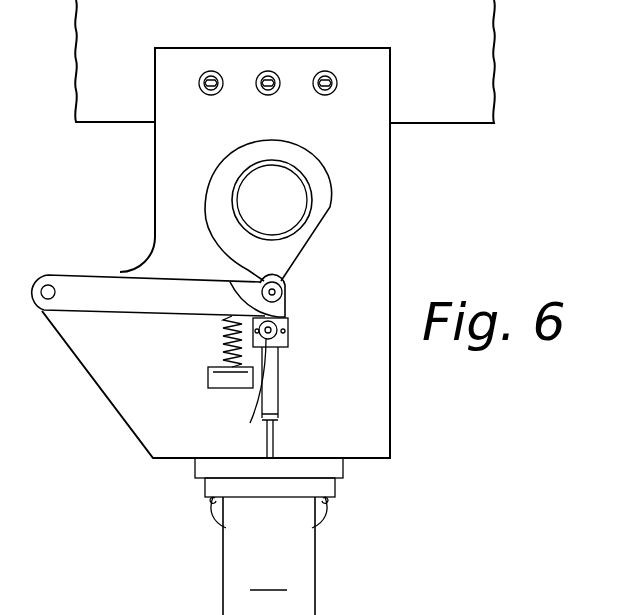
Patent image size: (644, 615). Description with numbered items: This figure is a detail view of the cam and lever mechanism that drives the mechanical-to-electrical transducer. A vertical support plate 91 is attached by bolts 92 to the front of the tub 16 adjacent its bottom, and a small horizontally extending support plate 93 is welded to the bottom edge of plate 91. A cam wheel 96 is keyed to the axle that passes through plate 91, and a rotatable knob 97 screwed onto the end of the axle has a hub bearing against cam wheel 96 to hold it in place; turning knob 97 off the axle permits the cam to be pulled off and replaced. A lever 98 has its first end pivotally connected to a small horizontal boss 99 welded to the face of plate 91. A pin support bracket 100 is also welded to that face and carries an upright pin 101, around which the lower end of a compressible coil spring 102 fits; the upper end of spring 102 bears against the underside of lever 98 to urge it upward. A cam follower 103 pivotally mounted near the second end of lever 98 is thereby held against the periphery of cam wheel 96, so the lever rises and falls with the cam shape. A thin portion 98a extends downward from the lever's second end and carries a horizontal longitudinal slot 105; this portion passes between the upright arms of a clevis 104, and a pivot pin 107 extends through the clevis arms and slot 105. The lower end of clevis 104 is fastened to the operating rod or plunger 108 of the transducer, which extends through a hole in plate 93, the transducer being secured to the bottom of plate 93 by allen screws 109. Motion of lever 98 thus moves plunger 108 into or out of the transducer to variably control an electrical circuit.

The tub 16 is at (472, 78).
The vertical support plate 91 is at (367, 234).
The bolts 92 is at (313, 74).
The horizontally extending support plate 93 is at (333, 467).
The cam wheel 96 is at (285, 153).
The knob 97 is at (290, 183).
The lever 98 is at (223, 307).
The thin portion of lever 98a is at (288, 322).
The boss 99 is at (52, 312).
The pin support bracket 100 is at (223, 380).
The pin 101 is at (225, 357).
The compressible coil spring 102 is at (225, 328).
The cam follower 103 is at (283, 284).
The clevis 104 is at (279, 392).
The longitudinal slot 105 is at (282, 333).
The pivot pin 107 is at (252, 416).
The operating rod or plunger 108 is at (274, 440).
The allen screws 109 is at (313, 528).